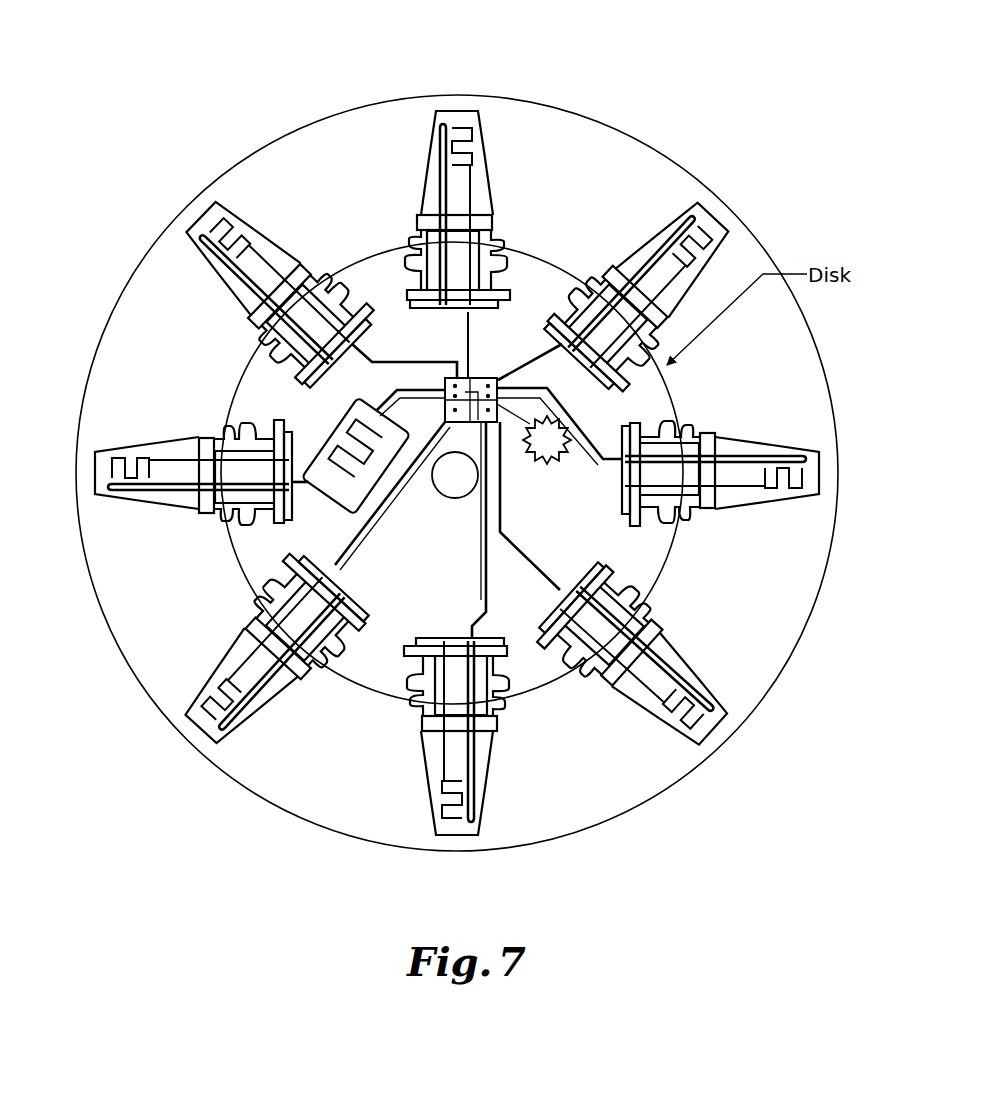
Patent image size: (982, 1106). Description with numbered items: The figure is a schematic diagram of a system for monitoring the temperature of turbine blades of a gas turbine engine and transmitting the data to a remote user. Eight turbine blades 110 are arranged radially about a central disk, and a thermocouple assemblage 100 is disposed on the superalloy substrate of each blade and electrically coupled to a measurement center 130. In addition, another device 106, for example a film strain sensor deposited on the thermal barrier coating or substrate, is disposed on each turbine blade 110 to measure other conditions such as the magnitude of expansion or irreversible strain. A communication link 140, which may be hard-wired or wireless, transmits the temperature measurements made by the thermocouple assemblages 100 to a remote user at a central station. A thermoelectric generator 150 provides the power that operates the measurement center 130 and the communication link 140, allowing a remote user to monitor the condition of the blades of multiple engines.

The thermocouple assemblage 100 is at (436, 135).
The device 106 is at (481, 165).
The turbine blade 110 is at (465, 114).
The measurement center 130 is at (492, 378).
The communication link 140 is at (575, 468).
The thermoelectric generator 150 is at (445, 496).